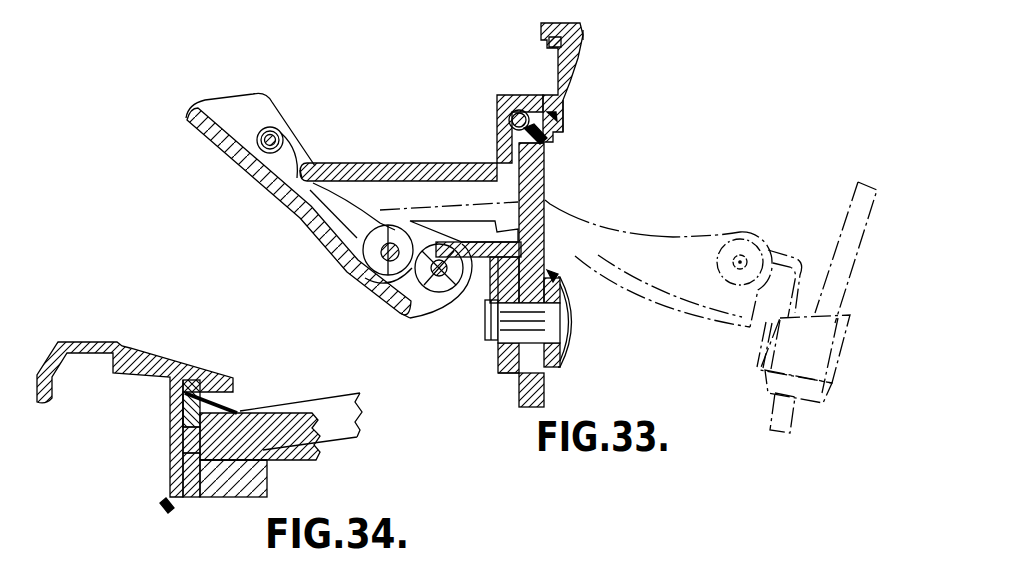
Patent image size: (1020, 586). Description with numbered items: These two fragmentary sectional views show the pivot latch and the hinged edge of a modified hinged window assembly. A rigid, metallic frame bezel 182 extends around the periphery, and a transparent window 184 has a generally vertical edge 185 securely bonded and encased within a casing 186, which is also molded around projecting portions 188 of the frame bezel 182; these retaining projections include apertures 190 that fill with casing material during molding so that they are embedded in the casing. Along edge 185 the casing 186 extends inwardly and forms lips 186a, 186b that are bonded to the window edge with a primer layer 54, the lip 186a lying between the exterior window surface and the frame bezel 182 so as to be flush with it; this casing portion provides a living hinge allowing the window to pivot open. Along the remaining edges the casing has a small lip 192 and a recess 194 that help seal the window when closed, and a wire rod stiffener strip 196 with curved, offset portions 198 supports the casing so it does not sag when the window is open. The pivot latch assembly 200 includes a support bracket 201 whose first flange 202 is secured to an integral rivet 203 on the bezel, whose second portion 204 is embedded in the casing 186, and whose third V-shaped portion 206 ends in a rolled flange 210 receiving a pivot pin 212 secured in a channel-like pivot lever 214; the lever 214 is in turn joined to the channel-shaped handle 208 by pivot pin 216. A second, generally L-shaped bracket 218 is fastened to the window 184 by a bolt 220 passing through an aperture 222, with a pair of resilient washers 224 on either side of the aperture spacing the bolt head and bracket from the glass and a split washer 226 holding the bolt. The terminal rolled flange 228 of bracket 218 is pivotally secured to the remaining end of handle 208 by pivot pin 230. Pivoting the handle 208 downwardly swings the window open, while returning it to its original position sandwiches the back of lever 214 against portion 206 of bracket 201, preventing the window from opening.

In FIG. 34, the primer layer 54 is at (225, 470).
In FIG. 33, the frame bezel 182 is at (585, 60).
In FIG. 34, the frame bezel 182 is at (131, 342).
In FIG. 33, the transparent window 184 is at (545, 392).
In FIG. 34, the transparent window 184 is at (320, 451).
In FIG. 34, the vertical edge 185 is at (178, 462).
In FIG. 33, the casing 186 is at (524, 133).
In FIG. 34, the casing 186 is at (160, 513).
In FIG. 34, the casing lip 186a is at (222, 406).
In FIG. 34, the casing lip 186b is at (258, 478).
In FIG. 34, the projecting portions 188 is at (176, 398).
In FIG. 34, the apertures 190 is at (173, 437).
In FIG. 33, the lip 192 is at (553, 143).
In FIG. 33, the recess 194 is at (546, 157).
In FIG. 33, the wire rod stiffener strip 196 is at (509, 119).
In FIG. 33, the offset portions 198 is at (568, 113).
In FIG. 33, the pivot latch assembly 200 is at (314, 148).
In FIG. 33, the support bracket 201 is at (333, 165).
In FIG. 33, the first flange 202 is at (547, 72).
In FIG. 33, the integral rivet 203 is at (546, 46).
In FIG. 33, the second portion 204 is at (497, 97).
In FIG. 33, the third V-shaped portion 206 is at (358, 177).
In FIG. 33, the handle 208 is at (216, 108).
In FIG. 33, the rolled flange 210 is at (362, 290).
In FIG. 33, the pivot pin 212 is at (368, 252).
In FIG. 33, the pivot lever 214 is at (278, 158).
In FIG. 33, the pivot pin 216 is at (272, 126).
In FIG. 33, the L-shaped bracket 218 is at (508, 374).
In FIG. 33, the bolt 220 is at (578, 324).
In FIG. 33, the aperture 222 is at (500, 361).
In FIG. 33, the resilient washers 224 is at (552, 280).
In FIG. 33, the split washer 226 is at (493, 294).
In FIG. 33, the rolled flange 228 is at (434, 258).
In FIG. 33, the pivot pin 230 is at (415, 275).